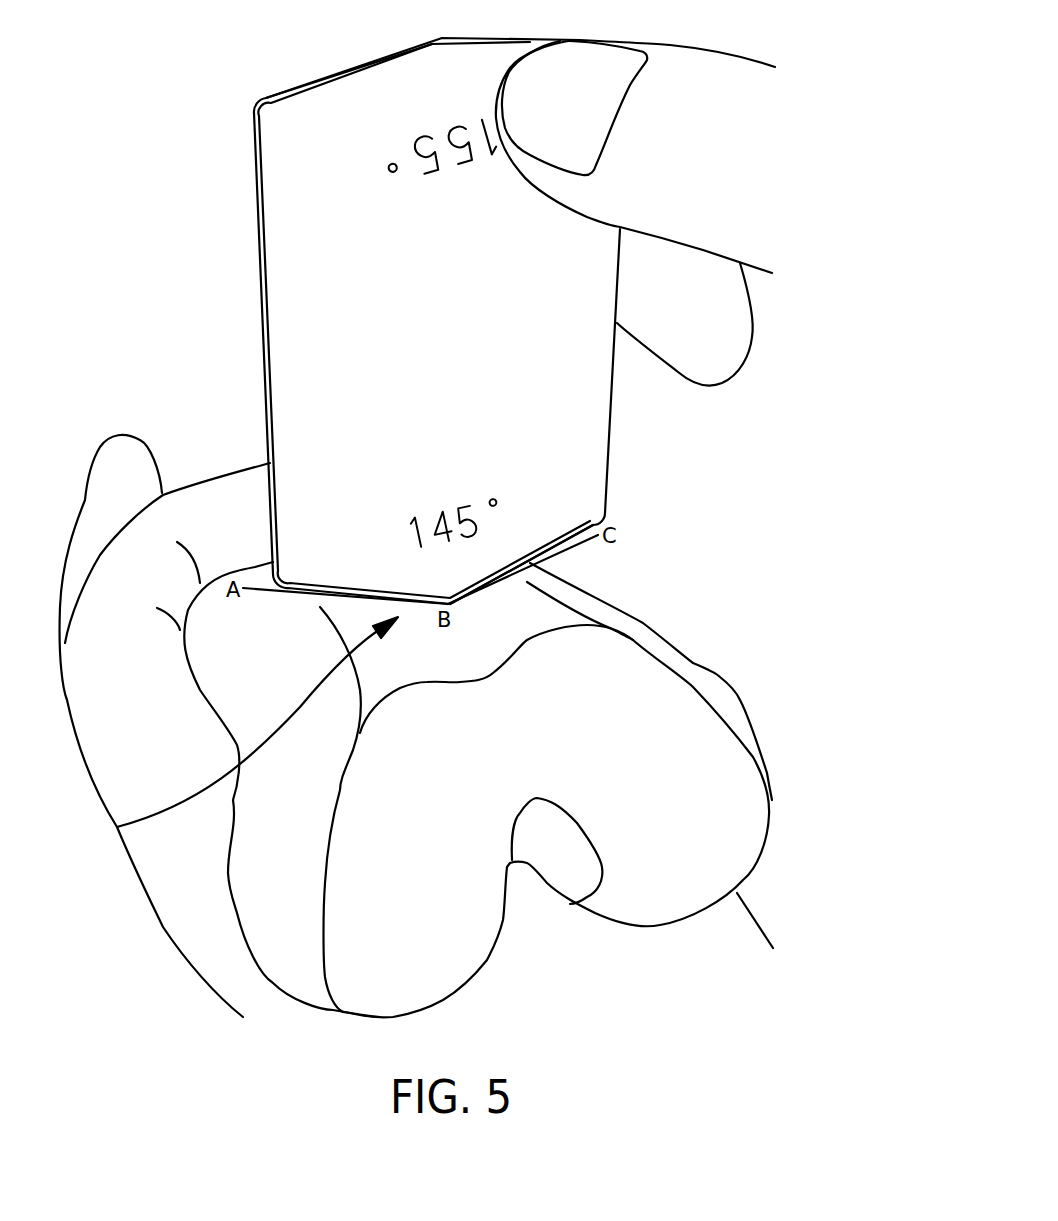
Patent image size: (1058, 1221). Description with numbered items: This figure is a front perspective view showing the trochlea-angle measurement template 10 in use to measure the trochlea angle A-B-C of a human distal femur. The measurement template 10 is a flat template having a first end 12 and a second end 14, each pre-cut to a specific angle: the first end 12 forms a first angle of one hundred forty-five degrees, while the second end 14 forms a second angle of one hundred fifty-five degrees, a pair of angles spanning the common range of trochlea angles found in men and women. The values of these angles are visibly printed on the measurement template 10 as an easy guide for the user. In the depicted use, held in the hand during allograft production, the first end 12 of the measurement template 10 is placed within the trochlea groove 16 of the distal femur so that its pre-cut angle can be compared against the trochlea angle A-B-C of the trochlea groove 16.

The measurement template 10 is at (312, 204).
The first end 12 is at (560, 547).
The second end 14 is at (305, 85).
The trochlea groove 16 is at (117, 827).